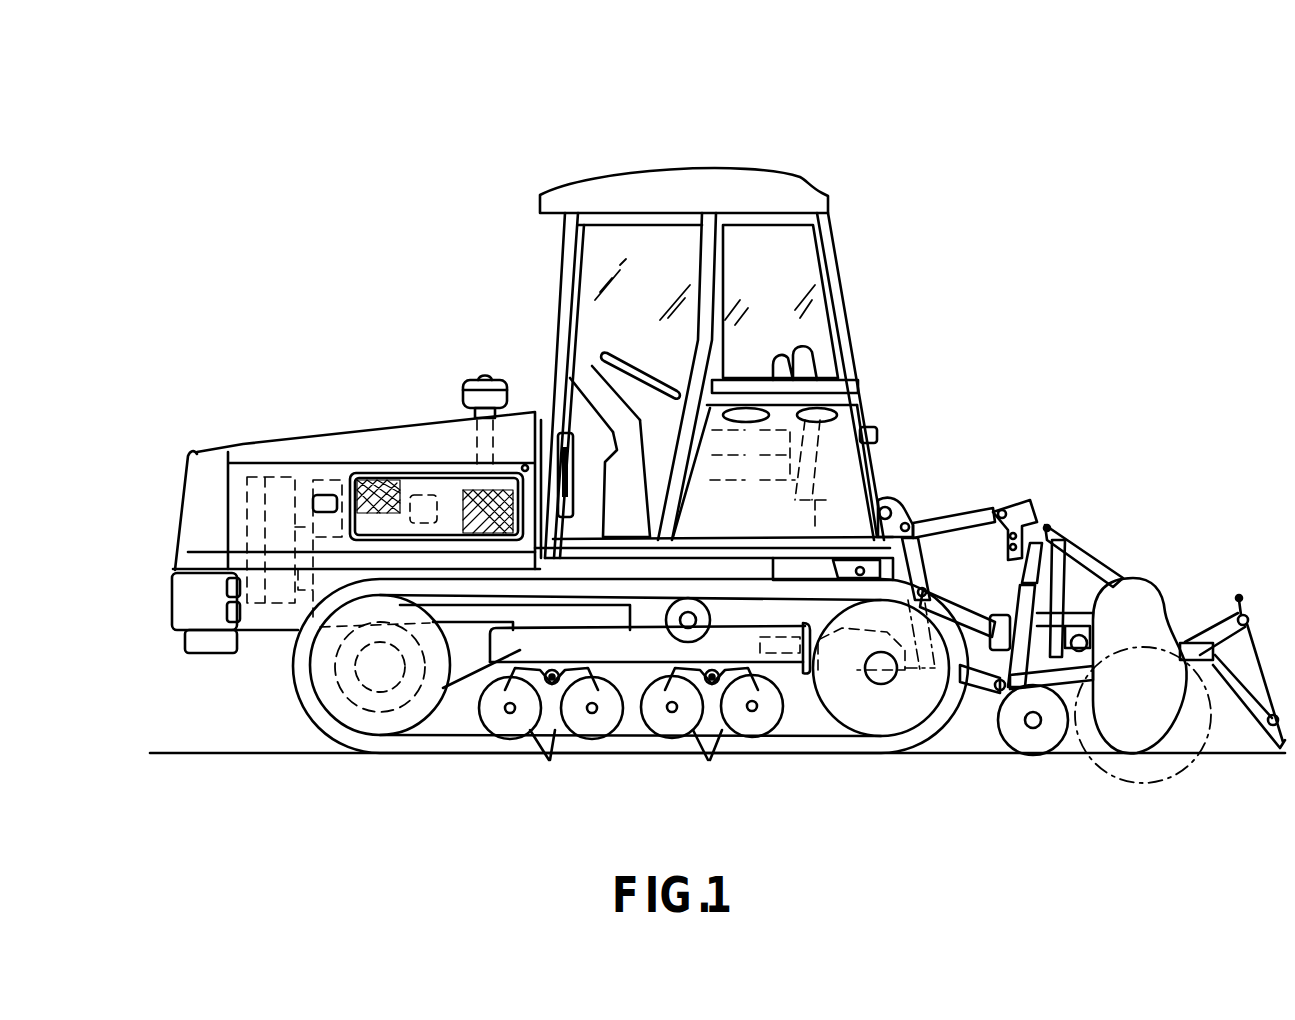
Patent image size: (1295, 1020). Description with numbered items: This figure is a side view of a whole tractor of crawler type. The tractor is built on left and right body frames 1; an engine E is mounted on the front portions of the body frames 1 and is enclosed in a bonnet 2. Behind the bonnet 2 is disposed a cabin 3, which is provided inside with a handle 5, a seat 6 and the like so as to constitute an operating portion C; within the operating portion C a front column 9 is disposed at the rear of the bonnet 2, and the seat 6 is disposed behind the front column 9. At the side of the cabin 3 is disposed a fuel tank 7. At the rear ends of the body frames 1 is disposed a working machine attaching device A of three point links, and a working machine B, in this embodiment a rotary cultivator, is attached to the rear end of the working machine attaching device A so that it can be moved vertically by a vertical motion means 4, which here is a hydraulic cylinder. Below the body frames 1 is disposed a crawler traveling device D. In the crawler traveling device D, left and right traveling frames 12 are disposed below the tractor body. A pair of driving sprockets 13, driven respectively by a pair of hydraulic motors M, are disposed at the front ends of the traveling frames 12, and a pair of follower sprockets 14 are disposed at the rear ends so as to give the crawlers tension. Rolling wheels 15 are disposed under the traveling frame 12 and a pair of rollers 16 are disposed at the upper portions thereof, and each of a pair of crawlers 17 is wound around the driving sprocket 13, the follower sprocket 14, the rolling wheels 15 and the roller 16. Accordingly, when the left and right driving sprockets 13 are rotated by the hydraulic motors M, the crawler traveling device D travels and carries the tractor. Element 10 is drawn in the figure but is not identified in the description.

The body frames 1 is at (262, 640).
The bonnet 2 is at (243, 443).
The cabin 3 is at (803, 178).
The vertical motion means 4 is at (935, 558).
The handle 5 is at (607, 355).
The seat 6 is at (810, 352).
The fuel tank 7 is at (857, 472).
The front column 9 is at (608, 447).
The gauge wheel 10 is at (990, 655).
The traveling frame 12 is at (487, 673).
The driving sprockets 13 is at (437, 723).
The follower sprockets 14 is at (836, 704).
The rolling wheels 15 is at (550, 760).
The rollers 16 is at (631, 665).
The crawlers 17 is at (960, 705).
The working machine attaching device A is at (1000, 589).
The working machine B is at (1143, 495).
The operating portion C is at (710, 314).
The crawler traveling device D is at (292, 713).
The engine E is at (398, 470).
The hydraulic motors M is at (377, 690).